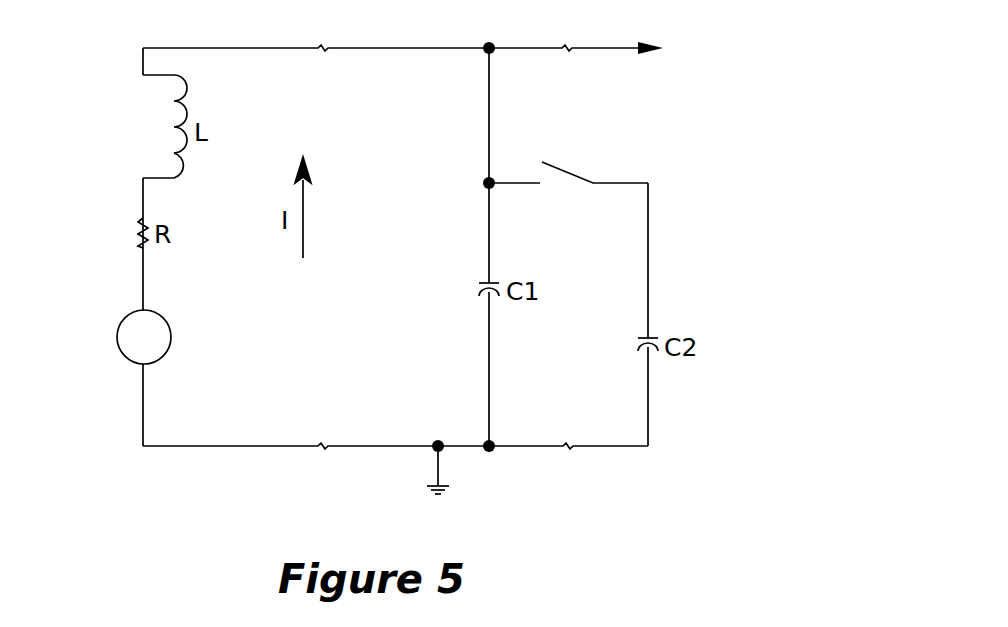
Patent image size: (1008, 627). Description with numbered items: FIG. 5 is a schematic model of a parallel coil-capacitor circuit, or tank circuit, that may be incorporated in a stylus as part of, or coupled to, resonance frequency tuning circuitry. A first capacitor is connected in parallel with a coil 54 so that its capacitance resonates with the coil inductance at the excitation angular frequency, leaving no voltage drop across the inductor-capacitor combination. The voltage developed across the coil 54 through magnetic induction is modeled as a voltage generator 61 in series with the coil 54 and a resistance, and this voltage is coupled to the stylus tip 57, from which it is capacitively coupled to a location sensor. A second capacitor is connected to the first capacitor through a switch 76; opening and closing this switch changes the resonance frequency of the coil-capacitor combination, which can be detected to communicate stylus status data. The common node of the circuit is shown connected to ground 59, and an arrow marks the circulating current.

The coil 54 is at (177, 143).
The voltage generator 61 is at (117, 340).
The stylus tip 57 is at (671, 48).
The switch 76 is at (567, 170).
The ground 59 is at (438, 486).